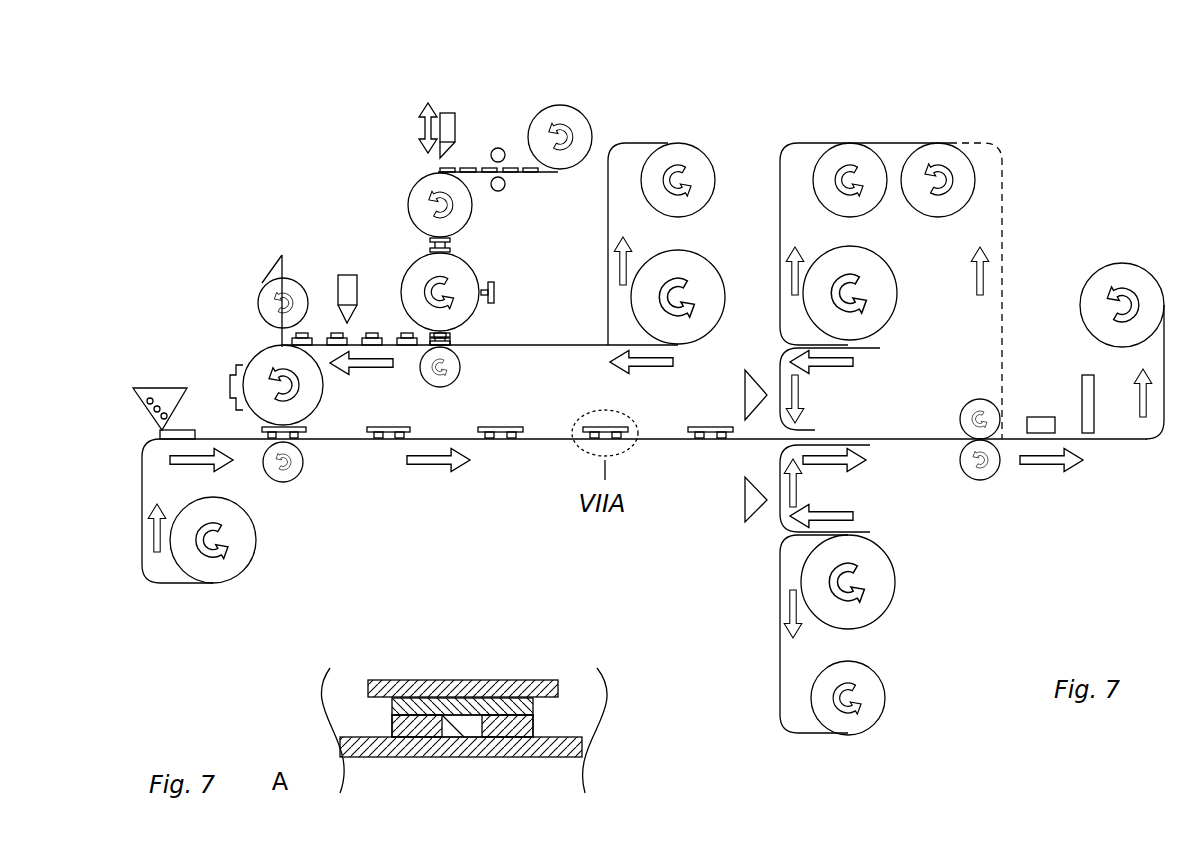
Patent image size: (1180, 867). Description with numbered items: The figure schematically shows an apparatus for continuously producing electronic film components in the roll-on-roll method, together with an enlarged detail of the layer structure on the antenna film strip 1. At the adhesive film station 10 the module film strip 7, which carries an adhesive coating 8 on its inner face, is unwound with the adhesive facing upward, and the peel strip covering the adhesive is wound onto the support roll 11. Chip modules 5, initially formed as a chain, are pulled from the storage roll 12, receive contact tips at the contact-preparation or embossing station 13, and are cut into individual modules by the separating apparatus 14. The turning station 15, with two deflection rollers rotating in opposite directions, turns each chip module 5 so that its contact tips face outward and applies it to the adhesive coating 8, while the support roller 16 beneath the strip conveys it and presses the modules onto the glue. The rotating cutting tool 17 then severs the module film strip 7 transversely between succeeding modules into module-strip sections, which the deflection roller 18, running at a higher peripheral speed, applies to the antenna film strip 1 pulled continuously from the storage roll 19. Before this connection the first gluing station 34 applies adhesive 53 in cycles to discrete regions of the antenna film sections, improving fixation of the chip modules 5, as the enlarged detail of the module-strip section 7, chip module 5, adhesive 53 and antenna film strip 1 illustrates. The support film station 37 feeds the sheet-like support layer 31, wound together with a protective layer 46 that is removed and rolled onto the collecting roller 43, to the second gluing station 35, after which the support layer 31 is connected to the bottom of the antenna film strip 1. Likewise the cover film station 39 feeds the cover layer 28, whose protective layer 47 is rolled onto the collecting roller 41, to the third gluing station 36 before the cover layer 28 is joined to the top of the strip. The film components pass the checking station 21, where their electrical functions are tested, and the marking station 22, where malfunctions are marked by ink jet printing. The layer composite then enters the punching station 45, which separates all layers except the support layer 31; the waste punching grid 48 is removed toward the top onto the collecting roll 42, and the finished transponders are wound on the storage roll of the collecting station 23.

In FIG. 7, the antenna film strip 1 is at (142, 497).
In FIG. 7A, the antenna film strip 1 is at (432, 750).
In FIG. 7, the chip module 5 is at (394, 335).
In FIG. 7A, the chip module 5 is at (503, 718).
In FIG. 7, the module film strip 7 is at (563, 345).
In FIG. 7A, the module film strip 7 is at (413, 688).
In FIG. 7, the adhesive coating 8 is at (578, 345).
In FIG. 7, the adhesive film station 10 is at (697, 322).
In FIG. 7, the support roll 11 is at (686, 152).
In FIG. 7, the storage roll 12 is at (571, 122).
In FIG. 7, the contact-preparation or embossing station 13 is at (503, 148).
In FIG. 7, the separating apparatus 14 is at (453, 122).
In FIG. 7, the turning station 15 is at (463, 207).
In FIG. 7, the support roller 16 is at (458, 378).
In FIG. 7, the rotating cutting tool 17 is at (260, 291).
In FIG. 7, the deflection roller 18 is at (313, 395).
In FIG. 7, the storage roll 19 is at (245, 545).
In FIG. 7, the checking station 21 is at (1040, 421).
In FIG. 7, the marking station 22 is at (1084, 392).
In FIG. 7, the collecting station 23 is at (1133, 268).
In FIG. 7, the cover layer 28 is at (800, 428).
In FIG. 7, the support layer 31 is at (780, 468).
In FIG. 7, the first gluing station 34 is at (162, 390).
In FIG. 7, the second gluing station 35 is at (750, 510).
In FIG. 7, the third gluing station 36 is at (753, 377).
In FIG. 7, the support film station 37 is at (880, 563).
In FIG. 7, the cover film station 39 is at (882, 280).
In FIG. 7, the collecting roller 41 is at (857, 153).
In FIG. 7, the collecting roll 42 is at (925, 155).
In FIG. 7, the collecting roller 43 is at (870, 682).
In FIG. 7, the punching station 45 is at (967, 411).
In FIG. 7, the protective layer 46 is at (780, 660).
In FIG. 7, the protective layer 47 is at (782, 248).
In FIG. 7, the waste punching grid 48 is at (1003, 282).
In FIG. 7, the adhesive 53 is at (193, 437).
In FIG. 7A, the adhesive 53 is at (530, 718).